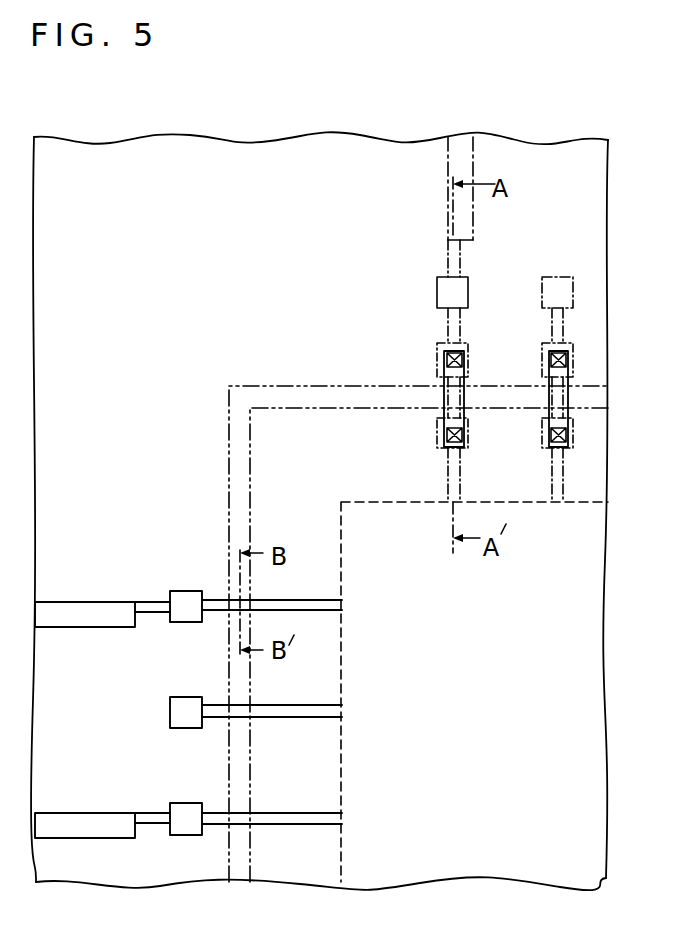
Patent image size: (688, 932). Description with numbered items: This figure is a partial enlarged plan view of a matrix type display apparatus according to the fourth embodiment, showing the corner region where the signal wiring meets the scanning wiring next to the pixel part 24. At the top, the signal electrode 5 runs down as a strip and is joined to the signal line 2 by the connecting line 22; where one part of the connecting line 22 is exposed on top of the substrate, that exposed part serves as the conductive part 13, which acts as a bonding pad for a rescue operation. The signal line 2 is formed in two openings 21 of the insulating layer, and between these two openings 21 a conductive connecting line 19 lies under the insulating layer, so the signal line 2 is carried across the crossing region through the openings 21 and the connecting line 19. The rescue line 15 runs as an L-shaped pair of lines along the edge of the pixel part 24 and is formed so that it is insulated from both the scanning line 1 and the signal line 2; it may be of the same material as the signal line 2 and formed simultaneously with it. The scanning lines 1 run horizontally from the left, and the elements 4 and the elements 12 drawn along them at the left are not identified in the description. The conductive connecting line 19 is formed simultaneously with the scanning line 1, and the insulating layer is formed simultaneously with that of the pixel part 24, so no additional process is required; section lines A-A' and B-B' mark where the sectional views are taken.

The scanning line 1 is at (307, 608).
The signal line 2 is at (455, 474).
The bonding pads 4 is at (97, 614).
The signal electrode 5 is at (446, 160).
The contact boxes 12 is at (190, 808).
The conductive part 13 is at (468, 298).
The rescue line 15 is at (265, 386).
The conductive connecting line 19 is at (462, 383).
The openings 21 is at (446, 358).
The connecting line 22 is at (444, 264).
The pixel part 24 is at (580, 668).